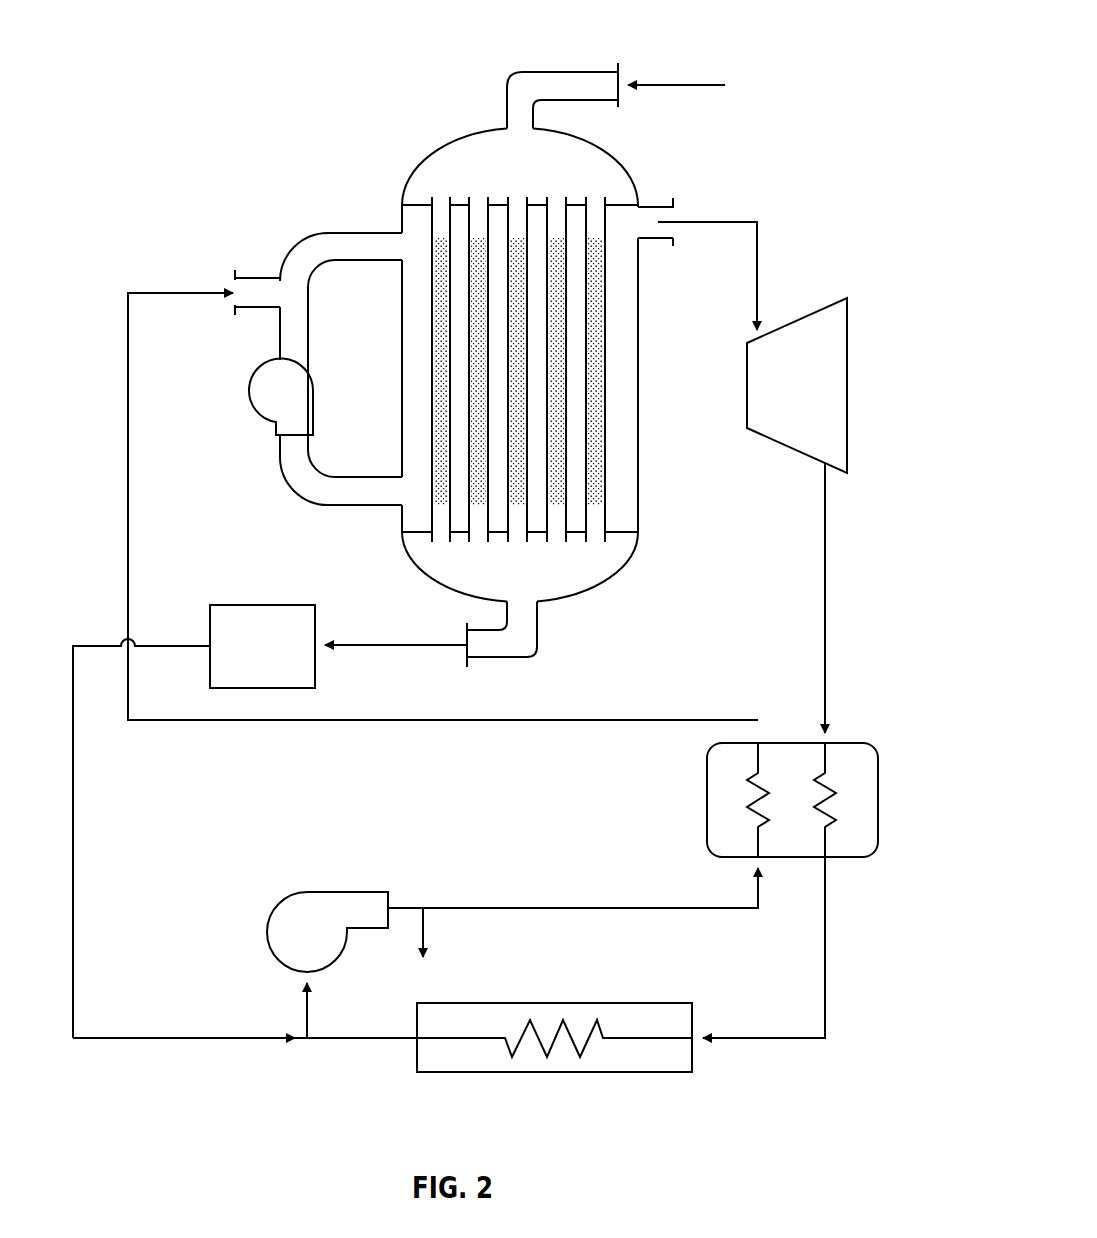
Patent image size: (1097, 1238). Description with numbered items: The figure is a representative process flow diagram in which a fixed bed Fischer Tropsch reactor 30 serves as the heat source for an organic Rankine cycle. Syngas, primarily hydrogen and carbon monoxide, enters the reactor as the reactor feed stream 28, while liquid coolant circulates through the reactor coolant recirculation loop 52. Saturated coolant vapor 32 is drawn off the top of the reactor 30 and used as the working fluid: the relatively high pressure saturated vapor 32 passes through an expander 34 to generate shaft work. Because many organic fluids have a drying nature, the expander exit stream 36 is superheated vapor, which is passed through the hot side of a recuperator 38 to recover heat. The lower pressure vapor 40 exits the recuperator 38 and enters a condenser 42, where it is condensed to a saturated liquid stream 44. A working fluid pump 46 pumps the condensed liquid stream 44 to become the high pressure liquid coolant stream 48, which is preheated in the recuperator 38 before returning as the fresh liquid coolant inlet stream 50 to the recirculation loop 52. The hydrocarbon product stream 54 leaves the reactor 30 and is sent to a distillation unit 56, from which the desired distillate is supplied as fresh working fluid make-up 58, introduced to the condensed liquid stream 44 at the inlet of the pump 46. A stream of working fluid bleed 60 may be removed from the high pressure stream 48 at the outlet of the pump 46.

The reactor feed stream 28 is at (671, 84).
The fixed bed Fischer Tropsch reactor 30 is at (467, 128).
The saturated coolant vapor 32 is at (716, 221).
The expander 34 is at (848, 383).
The expander exit stream 36 is at (826, 603).
The recuperator 38 is at (879, 800).
The lower pressure vapor 40 is at (826, 958).
The condenser 42 is at (553, 1003).
The saturated liquid stream 44 is at (350, 1041).
The working fluid pump 46 is at (313, 891).
The high pressure liquid coolant stream 48 is at (508, 907).
The fresh liquid coolant inlet stream 50 is at (127, 412).
The reactor coolant recirculation loop 52 is at (337, 232).
The product stream 54 is at (386, 644).
The distillation unit 56 is at (262, 605).
The fresh working fluid make-up 58 is at (141, 645).
The purge stream 60 is at (425, 930).